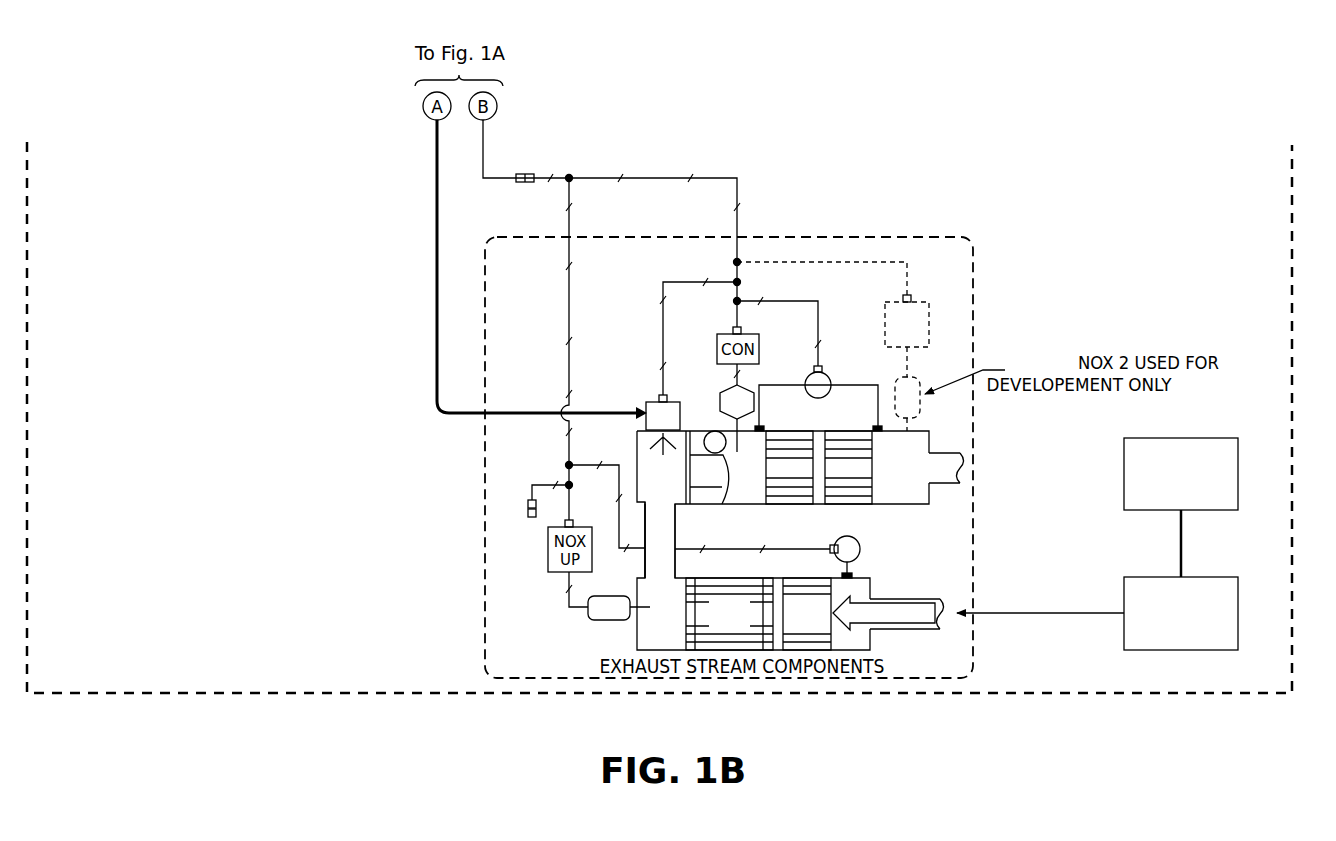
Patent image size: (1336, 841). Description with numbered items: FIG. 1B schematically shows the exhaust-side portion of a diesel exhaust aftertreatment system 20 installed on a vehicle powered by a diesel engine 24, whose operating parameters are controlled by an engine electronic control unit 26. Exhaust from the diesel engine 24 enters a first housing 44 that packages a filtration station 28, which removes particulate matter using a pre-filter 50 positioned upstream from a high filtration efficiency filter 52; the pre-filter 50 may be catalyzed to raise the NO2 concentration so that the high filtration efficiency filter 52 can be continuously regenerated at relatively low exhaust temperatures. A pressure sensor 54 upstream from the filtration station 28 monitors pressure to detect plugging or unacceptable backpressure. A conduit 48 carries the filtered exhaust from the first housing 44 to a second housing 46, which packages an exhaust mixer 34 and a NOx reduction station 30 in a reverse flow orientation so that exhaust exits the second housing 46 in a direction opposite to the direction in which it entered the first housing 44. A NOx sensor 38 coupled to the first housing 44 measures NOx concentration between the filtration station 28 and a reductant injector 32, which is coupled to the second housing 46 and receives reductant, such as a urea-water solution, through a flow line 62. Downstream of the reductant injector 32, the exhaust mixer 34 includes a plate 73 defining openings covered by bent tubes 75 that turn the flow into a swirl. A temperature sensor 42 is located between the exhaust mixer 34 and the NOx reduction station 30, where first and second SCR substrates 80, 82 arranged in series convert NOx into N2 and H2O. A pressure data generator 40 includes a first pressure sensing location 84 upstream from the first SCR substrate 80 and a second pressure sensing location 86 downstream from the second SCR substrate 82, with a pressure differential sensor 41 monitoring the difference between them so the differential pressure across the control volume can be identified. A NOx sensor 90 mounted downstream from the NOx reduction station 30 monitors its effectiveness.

The diesel exhaust aftertreatment system 20 is at (893, 212).
The diesel engine 24 is at (1124, 586).
The engine electronic control unit 26 is at (1124, 500).
The filtration station 28 is at (760, 657).
The NOx reduction station 30 is at (856, 511).
The reductant injector 32 is at (646, 405).
The exhaust mixer 34 is at (700, 430).
The NOx sensor 38 is at (590, 620).
The pressure data generator 40 is at (848, 376).
The pressure differential sensor 41 is at (818, 352).
The temperature sensor 42 is at (748, 392).
The first housing 44 is at (870, 637).
The second housing 46 is at (922, 428).
The conduit 48 is at (675, 535).
The pre-filter 50 is at (803, 578).
The high filtration efficiency filter 52 is at (726, 578).
The pressure sensor 54 is at (860, 553).
The flow line 62 is at (437, 254).
The plate 73 is at (686, 478).
The bent tubes 75 is at (717, 481).
The first SCR substrate 80 is at (795, 432).
The second SCR substrate 82 is at (843, 433).
The first pressure sensing location 84 is at (762, 427).
The second pressure sensing location 86 is at (878, 437).
The NOx sensor 90 is at (918, 380).